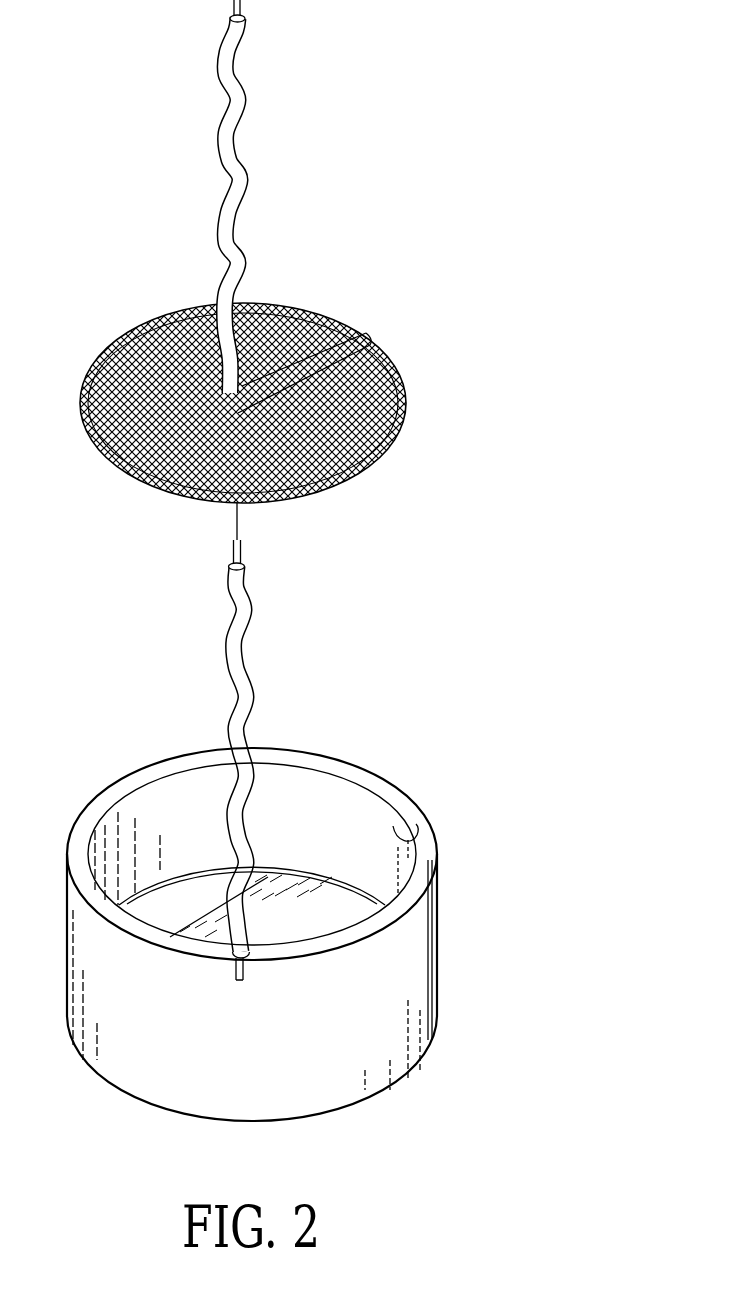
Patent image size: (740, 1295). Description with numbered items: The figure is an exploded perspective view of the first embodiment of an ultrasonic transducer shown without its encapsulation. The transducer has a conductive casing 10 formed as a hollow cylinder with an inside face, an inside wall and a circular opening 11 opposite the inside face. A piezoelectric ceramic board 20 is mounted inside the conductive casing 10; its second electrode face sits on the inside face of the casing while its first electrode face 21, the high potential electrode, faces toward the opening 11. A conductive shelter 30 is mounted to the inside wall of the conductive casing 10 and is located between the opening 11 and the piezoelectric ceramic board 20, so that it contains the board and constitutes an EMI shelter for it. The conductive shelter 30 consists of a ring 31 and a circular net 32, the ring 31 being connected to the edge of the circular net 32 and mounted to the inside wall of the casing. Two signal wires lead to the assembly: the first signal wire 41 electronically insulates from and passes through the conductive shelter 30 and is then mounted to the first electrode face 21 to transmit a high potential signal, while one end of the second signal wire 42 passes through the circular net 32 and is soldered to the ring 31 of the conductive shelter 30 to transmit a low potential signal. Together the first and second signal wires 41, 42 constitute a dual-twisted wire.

The conductive casing 10 is at (300, 923).
The opening 11 is at (395, 832).
The piezoelectric ceramic board 20 is at (313, 878).
The first electrode face 21 is at (378, 900).
The conductive shelter 30 is at (281, 369).
The ring 31 is at (390, 445).
The circular net 32 is at (378, 380).
The first signal wire 41 is at (248, 620).
The second signal wire 42 is at (235, 88).